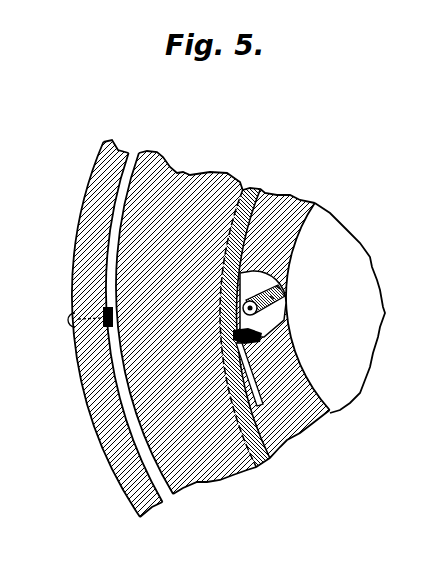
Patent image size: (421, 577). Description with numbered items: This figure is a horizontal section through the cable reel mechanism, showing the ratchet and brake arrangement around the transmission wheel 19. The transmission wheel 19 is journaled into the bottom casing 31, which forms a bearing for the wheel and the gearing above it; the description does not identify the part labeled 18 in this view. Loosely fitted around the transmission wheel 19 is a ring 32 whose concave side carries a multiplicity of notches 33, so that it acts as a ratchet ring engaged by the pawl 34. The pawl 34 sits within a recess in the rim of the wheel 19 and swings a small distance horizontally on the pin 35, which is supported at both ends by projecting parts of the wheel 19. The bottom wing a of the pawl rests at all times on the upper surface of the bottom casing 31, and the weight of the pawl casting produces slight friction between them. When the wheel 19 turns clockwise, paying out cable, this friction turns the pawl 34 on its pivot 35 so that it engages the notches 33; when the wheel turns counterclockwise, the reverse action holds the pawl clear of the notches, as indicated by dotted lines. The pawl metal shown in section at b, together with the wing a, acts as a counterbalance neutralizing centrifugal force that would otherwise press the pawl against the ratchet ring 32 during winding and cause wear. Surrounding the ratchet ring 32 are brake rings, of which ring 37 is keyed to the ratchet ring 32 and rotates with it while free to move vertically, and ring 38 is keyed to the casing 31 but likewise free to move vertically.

The bottom casing 31 is at (115, 147).
The brake ring 38 is at (153, 152).
The brake ring 37 is at (178, 177).
The ring 32 is at (253, 192).
The transmission wheel 19 is at (283, 198).
The cavity 18 is at (263, 304).
The notches 33 is at (243, 345).
The pin 35 is at (258, 308).
The pawl 34 is at (260, 337).
The bottom wing a is at (272, 298).
The pawl metal in section b is at (276, 291).